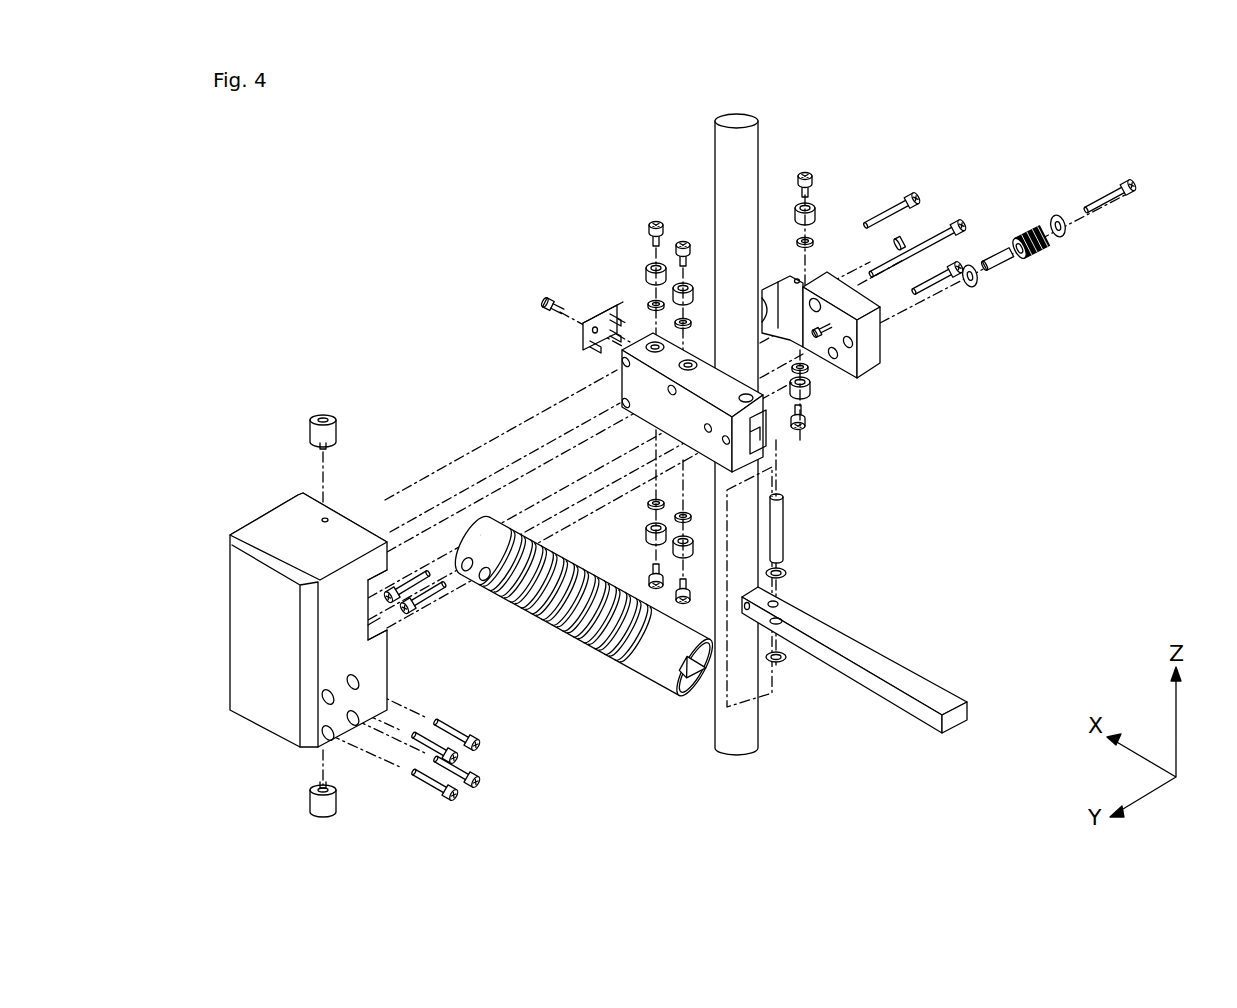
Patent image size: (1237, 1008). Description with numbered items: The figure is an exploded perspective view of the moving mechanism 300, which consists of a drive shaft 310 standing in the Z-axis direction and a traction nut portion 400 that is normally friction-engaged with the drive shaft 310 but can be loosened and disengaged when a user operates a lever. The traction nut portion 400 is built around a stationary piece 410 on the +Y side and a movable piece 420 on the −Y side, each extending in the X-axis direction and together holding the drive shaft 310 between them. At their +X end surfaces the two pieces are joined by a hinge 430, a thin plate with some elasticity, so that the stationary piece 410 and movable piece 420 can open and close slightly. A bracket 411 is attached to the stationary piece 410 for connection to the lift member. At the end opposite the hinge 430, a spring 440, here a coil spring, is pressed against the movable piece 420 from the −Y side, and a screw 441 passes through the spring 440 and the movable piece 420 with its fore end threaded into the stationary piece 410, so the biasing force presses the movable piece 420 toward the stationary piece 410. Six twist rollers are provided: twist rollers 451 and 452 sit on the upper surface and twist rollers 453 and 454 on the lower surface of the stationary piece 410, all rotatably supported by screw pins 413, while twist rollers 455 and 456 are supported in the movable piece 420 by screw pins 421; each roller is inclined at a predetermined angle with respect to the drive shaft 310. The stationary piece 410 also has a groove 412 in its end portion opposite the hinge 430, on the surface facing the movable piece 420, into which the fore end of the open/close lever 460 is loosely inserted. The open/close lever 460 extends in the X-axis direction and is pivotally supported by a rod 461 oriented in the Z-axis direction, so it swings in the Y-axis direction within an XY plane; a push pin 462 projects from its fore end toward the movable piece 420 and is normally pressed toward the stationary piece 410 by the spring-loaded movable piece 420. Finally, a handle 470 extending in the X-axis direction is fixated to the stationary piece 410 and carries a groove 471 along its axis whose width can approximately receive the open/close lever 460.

The moving mechanism 300 is at (486, 120).
The drive shaft 310 is at (742, 120).
The traction nut portion 400 is at (533, 227).
The stationary piece 410 is at (612, 375).
The bracket 411 is at (270, 513).
The groove 412 is at (766, 433).
The screw pins 413 is at (670, 596).
The movable piece 420 is at (880, 340).
The screw pins 421 is at (808, 177).
The hinge 430 is at (598, 322).
The spring 440 is at (1040, 258).
The screw 441 is at (1098, 200).
The twist roller 451 is at (648, 268).
The twist roller 452 is at (695, 290).
The twist roller 453 is at (646, 532).
The twist roller 454 is at (696, 549).
The twist roller 455 is at (816, 214).
The twist roller 456 is at (811, 392).
The open/close lever 460 is at (945, 702).
The rod 461 is at (785, 526).
The push pin 462 is at (786, 592).
The handle 470 is at (652, 668).
The groove 471 is at (700, 688).